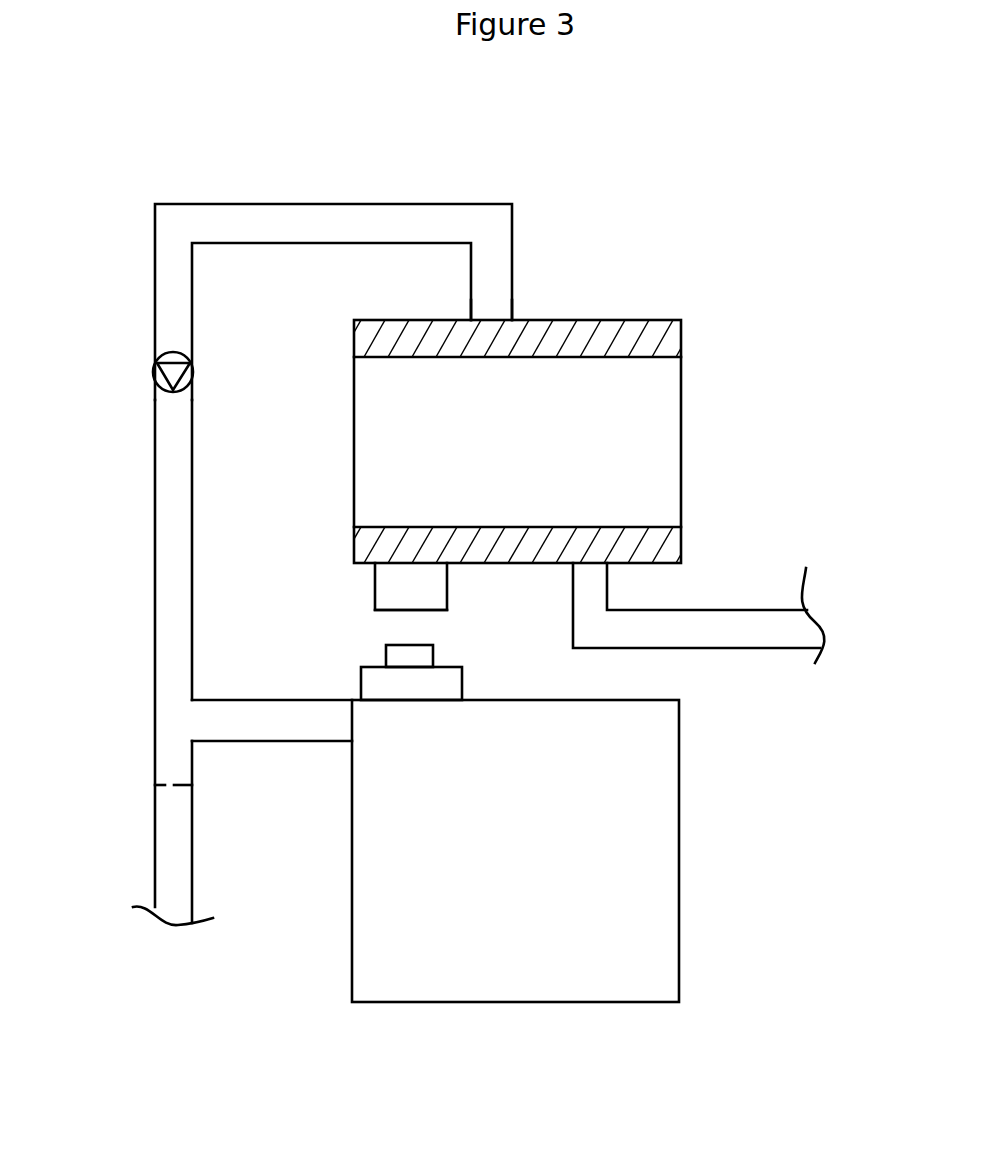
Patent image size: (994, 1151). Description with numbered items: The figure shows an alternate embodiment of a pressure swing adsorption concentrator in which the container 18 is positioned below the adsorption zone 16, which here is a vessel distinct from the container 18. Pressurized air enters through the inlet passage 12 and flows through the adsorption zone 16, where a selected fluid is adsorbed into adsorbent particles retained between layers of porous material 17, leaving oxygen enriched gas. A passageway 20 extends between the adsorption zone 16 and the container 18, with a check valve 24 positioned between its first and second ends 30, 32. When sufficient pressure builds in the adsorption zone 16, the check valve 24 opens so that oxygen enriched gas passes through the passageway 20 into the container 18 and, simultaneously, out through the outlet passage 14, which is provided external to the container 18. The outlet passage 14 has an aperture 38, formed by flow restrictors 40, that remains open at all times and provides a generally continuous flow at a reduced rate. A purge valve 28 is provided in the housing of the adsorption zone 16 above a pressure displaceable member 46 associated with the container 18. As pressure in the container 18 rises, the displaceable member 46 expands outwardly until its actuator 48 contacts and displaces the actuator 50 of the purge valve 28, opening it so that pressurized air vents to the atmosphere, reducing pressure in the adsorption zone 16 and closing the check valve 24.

The inlet passage 12 is at (793, 620).
The outlet passage 14 is at (173, 913).
The adsorption zone 16 is at (668, 445).
The porous material 17 is at (682, 335).
The container 18 is at (648, 790).
The passageway 20 is at (201, 213).
The check valve 24 is at (193, 373).
The purge valve 28 is at (375, 593).
The first end 30 is at (514, 319).
The second end 32 is at (152, 588).
The aperture 38 is at (173, 788).
The flow restrictors 40 is at (165, 787).
The pressure displaceable member 46 is at (438, 685).
The actuator 48 is at (410, 655).
The actuator 50 is at (388, 612).